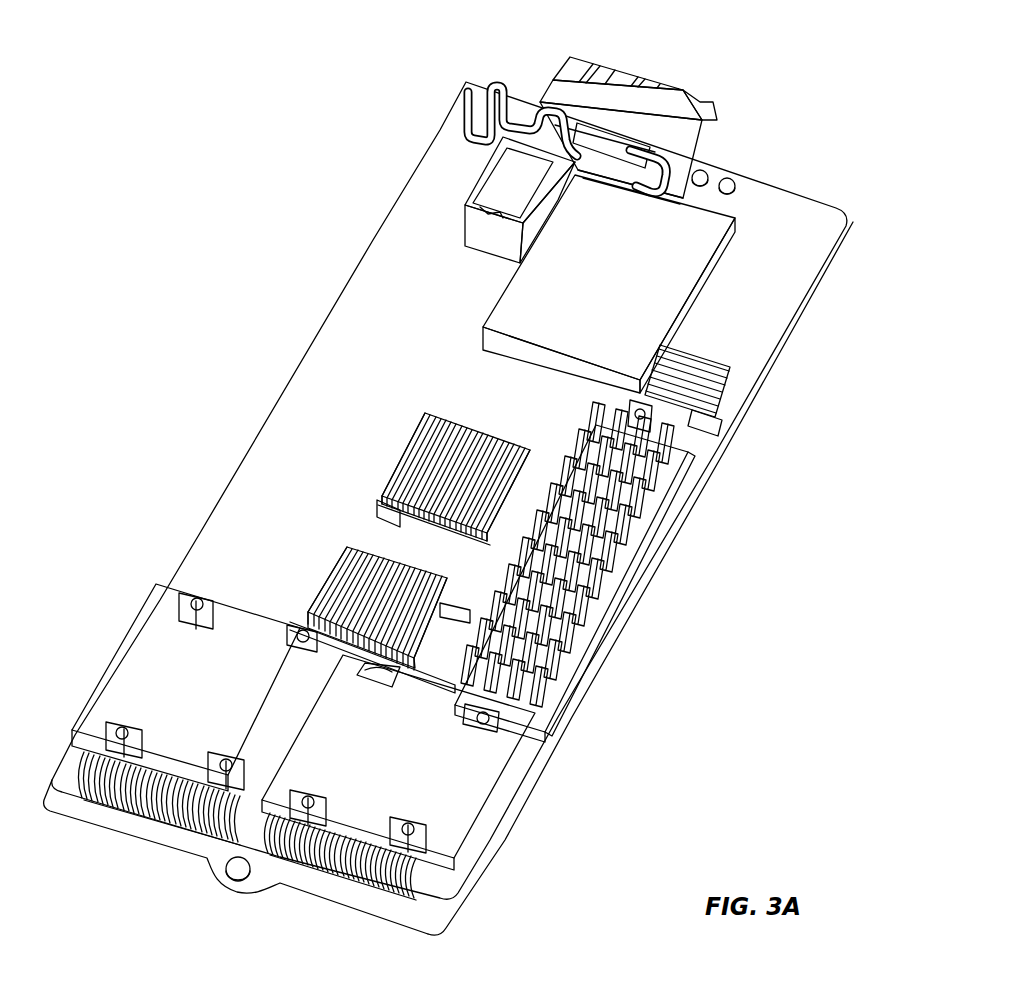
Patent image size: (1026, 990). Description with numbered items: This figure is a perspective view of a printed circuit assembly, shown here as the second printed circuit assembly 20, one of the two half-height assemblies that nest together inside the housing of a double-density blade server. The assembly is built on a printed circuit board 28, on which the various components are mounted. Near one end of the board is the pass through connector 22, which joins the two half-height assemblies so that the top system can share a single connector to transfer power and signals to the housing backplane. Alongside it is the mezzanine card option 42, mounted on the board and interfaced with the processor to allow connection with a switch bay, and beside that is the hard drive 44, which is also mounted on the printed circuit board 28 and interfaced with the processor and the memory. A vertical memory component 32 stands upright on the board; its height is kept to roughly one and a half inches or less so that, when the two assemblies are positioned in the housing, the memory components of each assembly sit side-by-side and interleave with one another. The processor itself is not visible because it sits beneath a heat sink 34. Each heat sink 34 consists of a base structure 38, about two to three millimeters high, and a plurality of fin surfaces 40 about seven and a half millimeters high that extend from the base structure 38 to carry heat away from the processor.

The second printed circuit assembly 20 is at (216, 234).
The pass through connector 22 is at (492, 180).
The printed circuit board 28 is at (808, 208).
The memory component 32 is at (668, 478).
The heat sink 34 is at (398, 538).
The base structure 38 is at (398, 524).
The fin surfaces 40 is at (420, 410).
The mezzanine card option 42 is at (643, 82).
The hard drive 44 is at (622, 288).